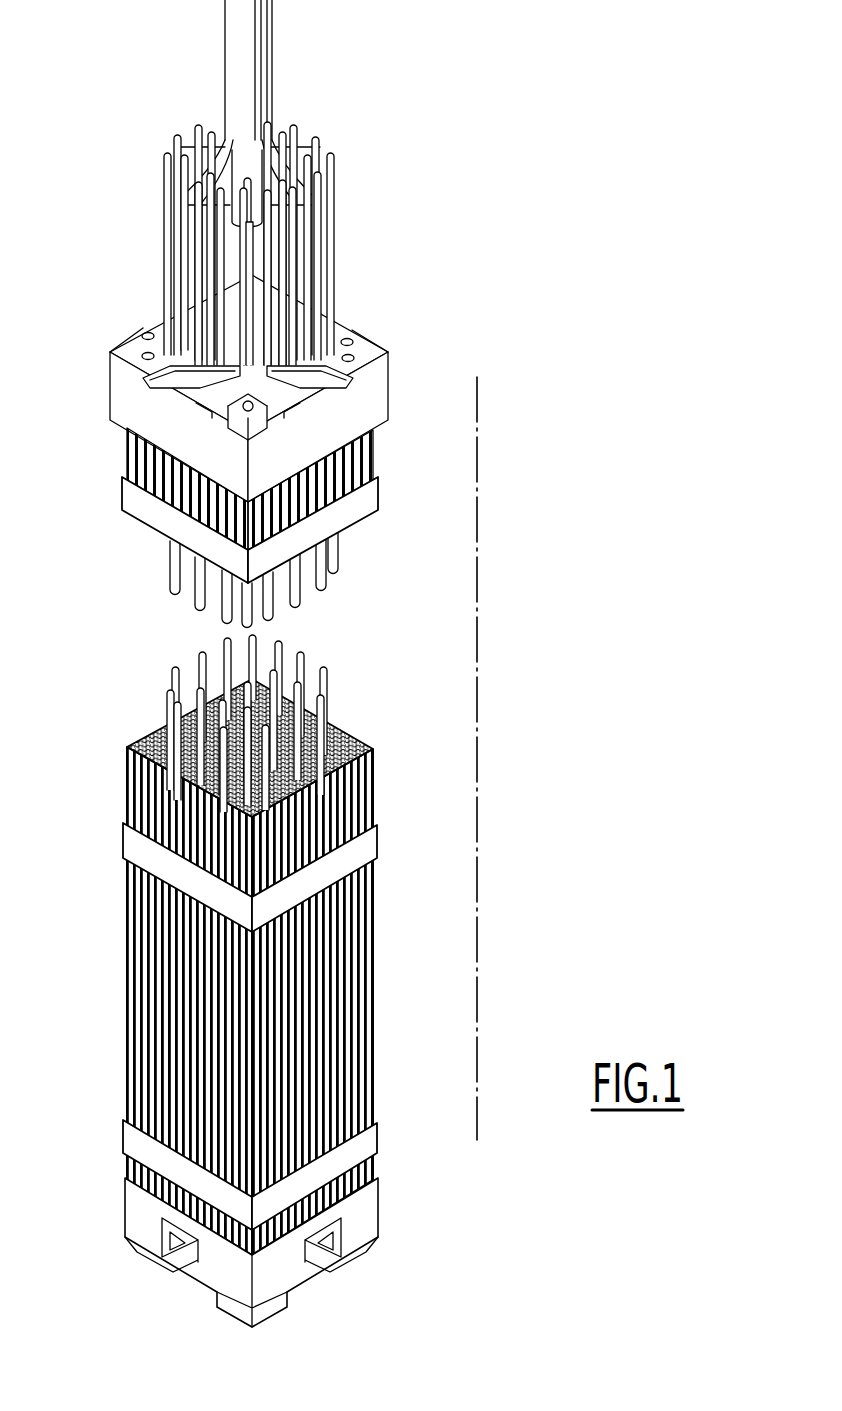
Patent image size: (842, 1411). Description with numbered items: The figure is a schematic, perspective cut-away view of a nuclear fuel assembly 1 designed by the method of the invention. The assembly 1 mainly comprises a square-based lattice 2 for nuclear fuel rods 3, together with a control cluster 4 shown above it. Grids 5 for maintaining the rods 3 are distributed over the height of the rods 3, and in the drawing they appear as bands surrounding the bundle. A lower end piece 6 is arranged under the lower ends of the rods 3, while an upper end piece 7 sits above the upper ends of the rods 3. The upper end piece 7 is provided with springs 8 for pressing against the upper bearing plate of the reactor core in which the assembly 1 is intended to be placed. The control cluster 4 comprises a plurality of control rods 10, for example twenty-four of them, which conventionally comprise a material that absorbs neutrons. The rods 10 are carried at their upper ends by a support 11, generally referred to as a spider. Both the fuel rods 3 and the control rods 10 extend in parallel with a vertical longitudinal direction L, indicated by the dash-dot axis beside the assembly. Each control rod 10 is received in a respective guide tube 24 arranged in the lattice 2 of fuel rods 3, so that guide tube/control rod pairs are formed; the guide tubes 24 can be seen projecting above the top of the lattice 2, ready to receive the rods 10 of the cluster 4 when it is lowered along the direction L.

The nuclear fuel assembly 1 is at (264, 314).
The square-based lattice 2 is at (266, 981).
The nuclear fuel rods 3 is at (362, 742).
The control cluster 4 is at (344, 130).
The grids 5 is at (362, 498).
The lower end piece 6 is at (137, 1213).
The upper end piece 7 is at (362, 405).
The springs 8 is at (348, 330).
The control rods 10 is at (317, 270).
The support 11 is at (282, 70).
The guide tube 24 is at (325, 720).
The vertical longitudinal direction L is at (478, 432).